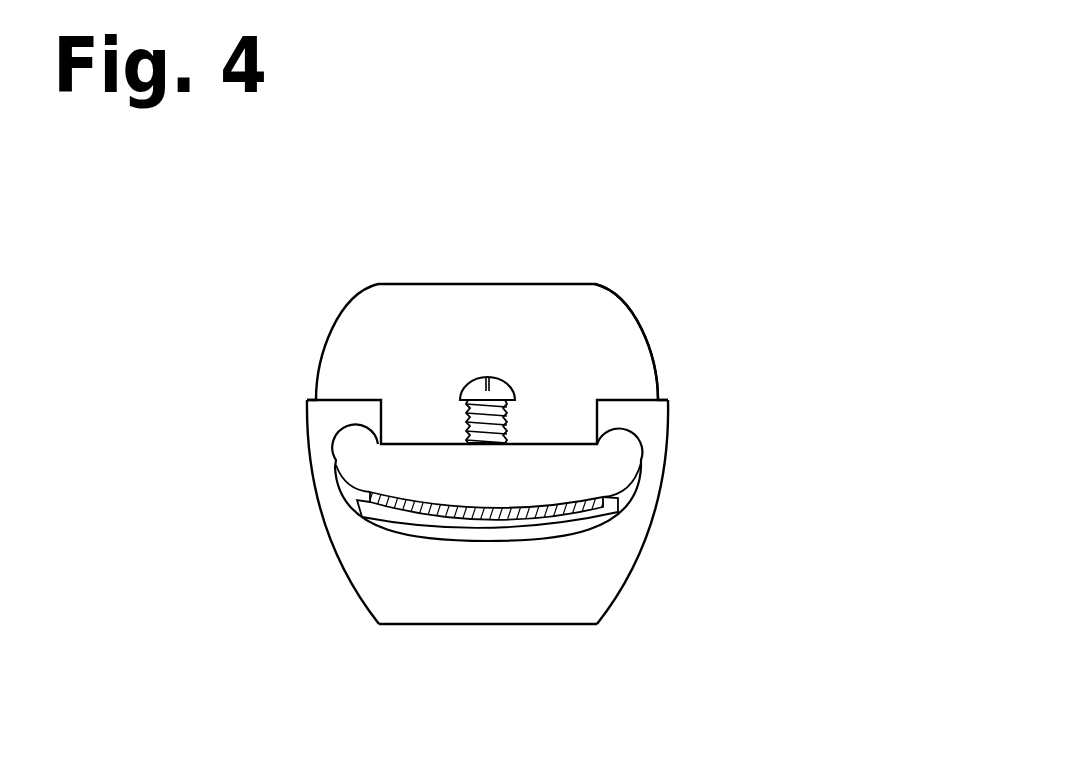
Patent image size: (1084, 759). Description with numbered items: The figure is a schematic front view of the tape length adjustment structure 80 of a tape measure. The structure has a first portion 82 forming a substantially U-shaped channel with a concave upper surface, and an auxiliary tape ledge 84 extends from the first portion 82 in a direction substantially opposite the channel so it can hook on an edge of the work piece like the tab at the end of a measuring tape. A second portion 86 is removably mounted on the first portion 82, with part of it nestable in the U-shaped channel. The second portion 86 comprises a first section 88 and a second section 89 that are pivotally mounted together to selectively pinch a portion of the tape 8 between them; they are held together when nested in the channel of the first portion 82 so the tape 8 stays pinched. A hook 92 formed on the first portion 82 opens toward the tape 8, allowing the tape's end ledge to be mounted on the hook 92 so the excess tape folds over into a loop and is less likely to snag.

The tape length adjustment structure 80 is at (727, 270).
The first portion 82 is at (605, 557).
The auxiliary tape ledge 84 is at (492, 592).
The second portion 86 is at (630, 370).
The first section 88 is at (378, 467).
The second section 89 is at (465, 528).
The hook 92 is at (518, 280).
The tape 8 is at (600, 494).